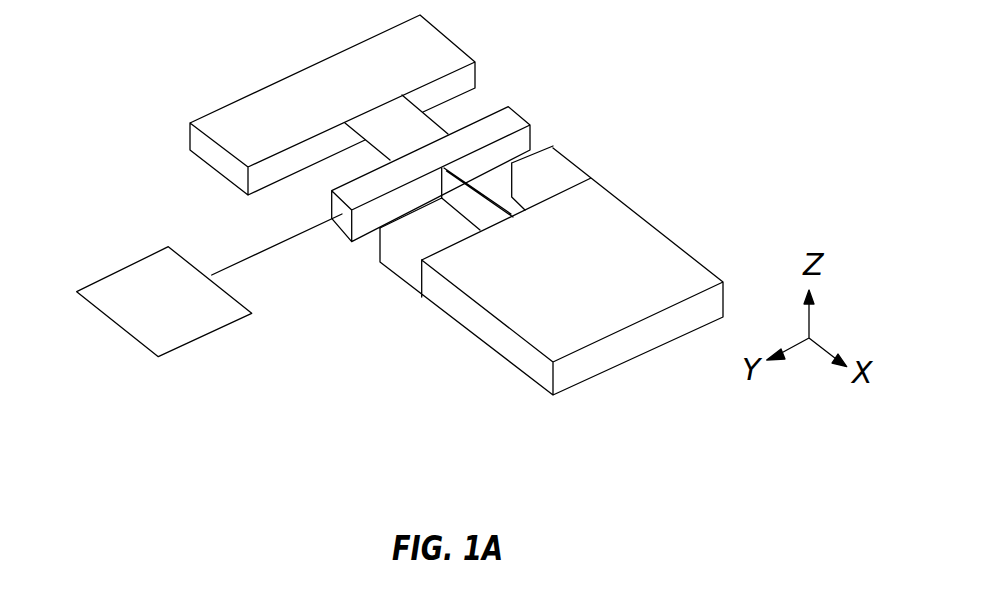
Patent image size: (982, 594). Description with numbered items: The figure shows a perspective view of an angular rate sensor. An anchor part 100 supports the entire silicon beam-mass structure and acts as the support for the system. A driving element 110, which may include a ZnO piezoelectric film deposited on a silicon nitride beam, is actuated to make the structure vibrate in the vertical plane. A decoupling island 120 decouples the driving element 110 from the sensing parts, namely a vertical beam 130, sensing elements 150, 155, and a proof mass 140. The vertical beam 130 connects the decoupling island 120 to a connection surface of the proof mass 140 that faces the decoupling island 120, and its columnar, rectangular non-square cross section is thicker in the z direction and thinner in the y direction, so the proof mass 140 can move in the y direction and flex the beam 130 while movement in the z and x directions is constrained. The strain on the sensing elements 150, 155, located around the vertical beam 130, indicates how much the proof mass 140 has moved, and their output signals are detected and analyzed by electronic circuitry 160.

The anchor part 100 is at (367, 36).
The driving element 110 is at (382, 113).
The decoupling island 120 is at (527, 108).
The vertical beam 130 is at (490, 218).
The proof mass 140 is at (628, 362).
The sensing element 150 is at (532, 152).
The sensing element 155 is at (382, 200).
The electronic circuitry 160 is at (120, 265).